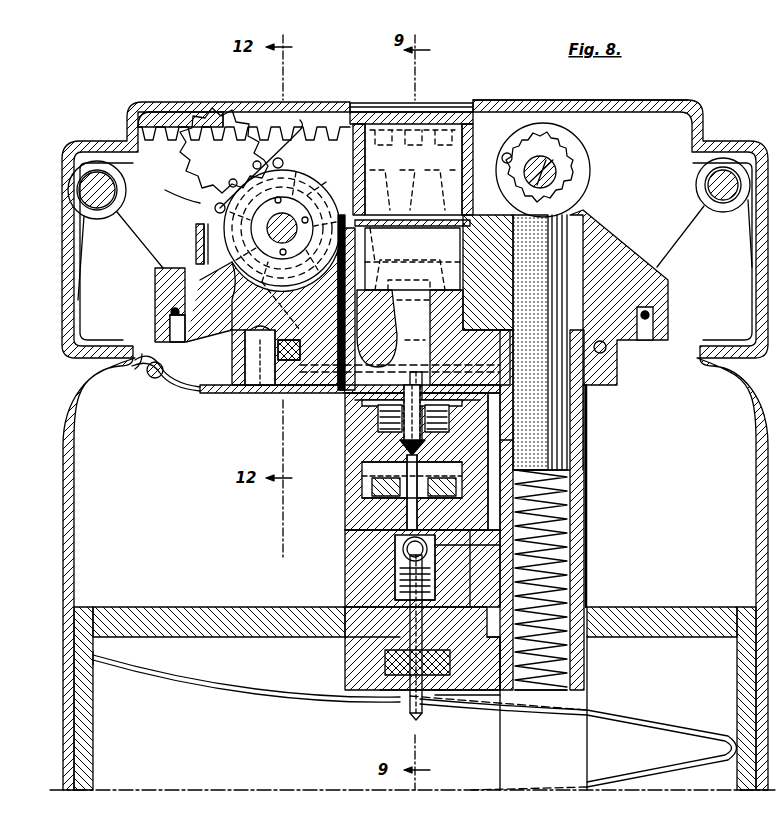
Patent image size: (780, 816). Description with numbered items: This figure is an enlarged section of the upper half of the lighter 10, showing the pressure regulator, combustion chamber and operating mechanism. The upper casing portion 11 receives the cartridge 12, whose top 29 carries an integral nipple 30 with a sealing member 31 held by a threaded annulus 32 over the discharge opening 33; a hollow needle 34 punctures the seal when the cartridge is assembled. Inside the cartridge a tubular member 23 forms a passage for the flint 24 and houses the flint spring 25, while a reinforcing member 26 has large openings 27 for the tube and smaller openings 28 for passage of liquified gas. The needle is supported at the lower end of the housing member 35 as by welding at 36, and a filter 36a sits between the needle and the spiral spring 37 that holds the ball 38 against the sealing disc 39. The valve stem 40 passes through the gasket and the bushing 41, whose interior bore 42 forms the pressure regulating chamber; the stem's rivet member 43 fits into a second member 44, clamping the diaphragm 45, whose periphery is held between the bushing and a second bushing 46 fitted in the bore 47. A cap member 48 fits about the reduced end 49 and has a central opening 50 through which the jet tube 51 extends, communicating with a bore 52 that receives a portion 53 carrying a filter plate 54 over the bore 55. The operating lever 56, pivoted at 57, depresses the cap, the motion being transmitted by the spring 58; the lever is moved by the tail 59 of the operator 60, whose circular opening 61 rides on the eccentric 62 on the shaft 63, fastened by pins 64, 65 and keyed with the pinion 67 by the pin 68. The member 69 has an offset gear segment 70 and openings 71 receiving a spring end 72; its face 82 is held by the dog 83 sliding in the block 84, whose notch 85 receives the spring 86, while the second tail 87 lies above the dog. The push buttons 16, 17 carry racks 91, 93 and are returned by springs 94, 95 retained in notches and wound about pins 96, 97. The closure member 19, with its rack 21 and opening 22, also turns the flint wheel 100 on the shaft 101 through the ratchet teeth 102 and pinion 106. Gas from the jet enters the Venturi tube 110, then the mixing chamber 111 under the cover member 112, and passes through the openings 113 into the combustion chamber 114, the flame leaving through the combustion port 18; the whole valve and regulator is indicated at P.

The lighter 10 is at (62, 475).
The upper casing portion 11 is at (63, 530).
The cartridge 12 is at (145, 607).
The push button 16 is at (735, 145).
The push button 17 is at (72, 158).
The combustion port 18 is at (440, 101).
The closure member 19 is at (372, 103).
The rack 21 is at (200, 110).
The opening 22 is at (252, 116).
The tubular member 23 is at (584, 530).
The flint 24 is at (586, 222).
The flint spring 25 is at (540, 580).
The reinforcing member 26 is at (272, 700).
The openings 27 is at (598, 760).
The openings 28 is at (178, 682).
The top of the cartridge 29 is at (690, 607).
The nipple 30 is at (345, 668).
The sealing member 31 is at (395, 690).
The threaded annulus 32 is at (385, 672).
The discharge opening 33 is at (445, 700).
The hollow needle 34 is at (410, 705).
The housing member 35 is at (345, 570).
The weld or solder joint 36 is at (345, 597).
The filter 36a is at (345, 640).
The spiral spring 37 is at (400, 548).
The ball 38 is at (415, 549).
The sealing disc 39 is at (350, 518).
The valve stem 40 is at (362, 495).
The bushing 41 is at (362, 480).
The interior bore 42 is at (400, 448).
The rivet member 43 is at (378, 445).
The second member 44 is at (378, 420).
The diaphragm 45 is at (444, 488).
The second bushing 46 is at (362, 406).
The bore 47 is at (568, 500).
The cap member 48 is at (500, 425).
The reduced end 49 is at (490, 447).
The central opening 50 is at (345, 402).
The jet tube 51 is at (416, 370).
The bore 52 is at (540, 342).
The portion 53 is at (480, 470).
The filter plate 54 is at (386, 488).
The bore 55 is at (462, 568).
The operating lever 56 is at (290, 393).
The pivot 57 is at (154, 380).
The spring 58 is at (355, 413).
The tail 59 is at (338, 362).
The operator 60 is at (255, 262).
The circular opening 61 is at (196, 222).
The eccentric 62 is at (208, 238).
The shaft 63 is at (412, 259).
The pin 64 is at (272, 168).
The pin 65 is at (312, 215).
The pinion 67 is at (290, 310).
The pin 68 is at (269, 305).
The member 69 is at (175, 198).
The offset gear segment 70 is at (292, 135).
The openings 71 is at (230, 178).
The spring end 72 is at (300, 125).
The face 82 is at (282, 340).
The dog 83 is at (250, 368).
The block 84 is at (200, 342).
The notch 85 is at (258, 395).
The spring 86 is at (240, 360).
The second tail 87 is at (222, 292).
The rack 91 is at (455, 175).
The rack 93 is at (412, 245).
The spring 94 is at (750, 272).
The spring 95 is at (80, 275).
The notch / pin 96 is at (648, 330).
The notch / pin 97 is at (135, 369).
The flint wheel 100 is at (576, 166).
The shaft 101 is at (556, 156).
The ratchet teeth 102 is at (571, 174).
The pinion 106 is at (512, 155).
The Venturi tube 110 is at (433, 337).
The mixing chamber 111 is at (409, 271).
The cover member 112 is at (438, 191).
The openings 113 is at (385, 210).
The combustion chamber 114 is at (412, 148).
The combined valve and pressure regulator P is at (340, 530).